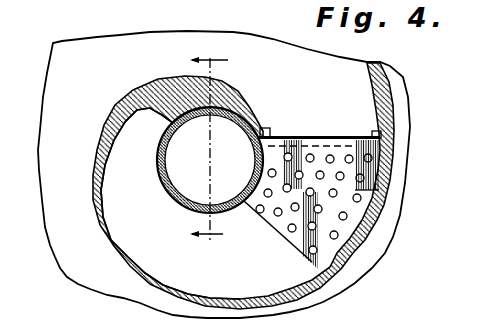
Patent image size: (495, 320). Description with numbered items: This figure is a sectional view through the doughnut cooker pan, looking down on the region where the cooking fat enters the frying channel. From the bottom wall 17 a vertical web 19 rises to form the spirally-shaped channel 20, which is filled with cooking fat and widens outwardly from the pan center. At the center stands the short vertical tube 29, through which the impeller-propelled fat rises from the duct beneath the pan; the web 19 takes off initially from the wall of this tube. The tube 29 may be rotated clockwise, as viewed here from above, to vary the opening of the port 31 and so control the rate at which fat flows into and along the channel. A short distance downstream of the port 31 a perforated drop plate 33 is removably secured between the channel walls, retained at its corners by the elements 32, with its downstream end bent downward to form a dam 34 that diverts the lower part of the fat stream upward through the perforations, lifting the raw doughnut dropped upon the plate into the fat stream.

The bottom wall 17 is at (197, 148).
The vertical web 19 is at (240, 103).
The spirally-shaped channel 20 is at (67, 226).
The vertical tube 29 is at (174, 199).
The port 31 is at (158, 141).
The clips 32 is at (267, 128).
The drop plate 33 is at (373, 190).
The dam 34 is at (320, 145).